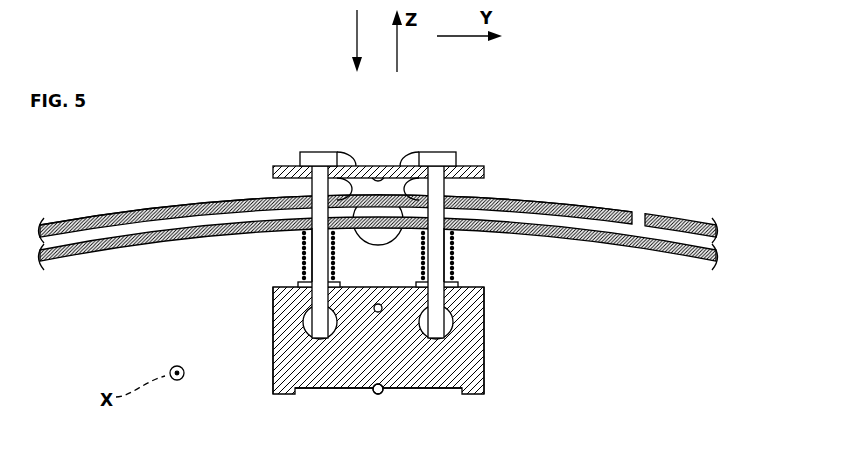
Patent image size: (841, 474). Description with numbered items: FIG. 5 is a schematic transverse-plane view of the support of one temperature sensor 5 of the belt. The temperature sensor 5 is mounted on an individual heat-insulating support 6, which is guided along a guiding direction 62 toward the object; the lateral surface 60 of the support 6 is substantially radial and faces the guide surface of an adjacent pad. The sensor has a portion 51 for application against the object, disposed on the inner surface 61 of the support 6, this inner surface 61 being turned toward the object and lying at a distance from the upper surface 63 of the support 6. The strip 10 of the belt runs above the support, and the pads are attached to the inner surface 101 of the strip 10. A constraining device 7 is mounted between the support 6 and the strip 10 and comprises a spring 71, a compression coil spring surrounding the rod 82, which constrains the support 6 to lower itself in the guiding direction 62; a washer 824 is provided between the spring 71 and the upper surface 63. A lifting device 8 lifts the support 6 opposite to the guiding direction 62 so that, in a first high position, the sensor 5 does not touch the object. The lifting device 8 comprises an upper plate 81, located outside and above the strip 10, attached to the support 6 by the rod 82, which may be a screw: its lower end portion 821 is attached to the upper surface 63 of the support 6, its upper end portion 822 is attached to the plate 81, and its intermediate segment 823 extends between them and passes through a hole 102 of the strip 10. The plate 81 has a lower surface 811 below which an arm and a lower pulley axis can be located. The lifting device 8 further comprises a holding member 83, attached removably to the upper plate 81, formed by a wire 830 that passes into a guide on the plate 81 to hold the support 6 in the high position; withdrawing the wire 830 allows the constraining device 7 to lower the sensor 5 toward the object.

The temperature sensor 5 is at (386, 410).
The heat-insulating support 6 is at (493, 372).
The constraining device 7 is at (300, 268).
The lifting device 8 is at (494, 170).
The strip 10 is at (121, 266).
The application portion 51 is at (368, 400).
The lateral surface of the support 60 is at (273, 348).
The inner surface of the support 61 is at (303, 399).
The guiding direction 62 is at (356, 38).
The upper surface of the support 63 is at (393, 280).
The spring 71 is at (303, 243).
The upper plate 81 is at (359, 148).
The lower surface of the plate 811 is at (382, 185).
The rod 82 is at (435, 262).
The holding member 83 is at (586, 198).
The inner surface of the strip 101 is at (634, 260).
The hole of the strip 102 is at (638, 220).
The lower end portion of the rod 821 is at (310, 300).
The upper end portion of the rod 822 is at (300, 164).
The intermediate segment of the rod 823 is at (447, 234).
The washer 824 is at (300, 276).
The wire 830 is at (174, 207).